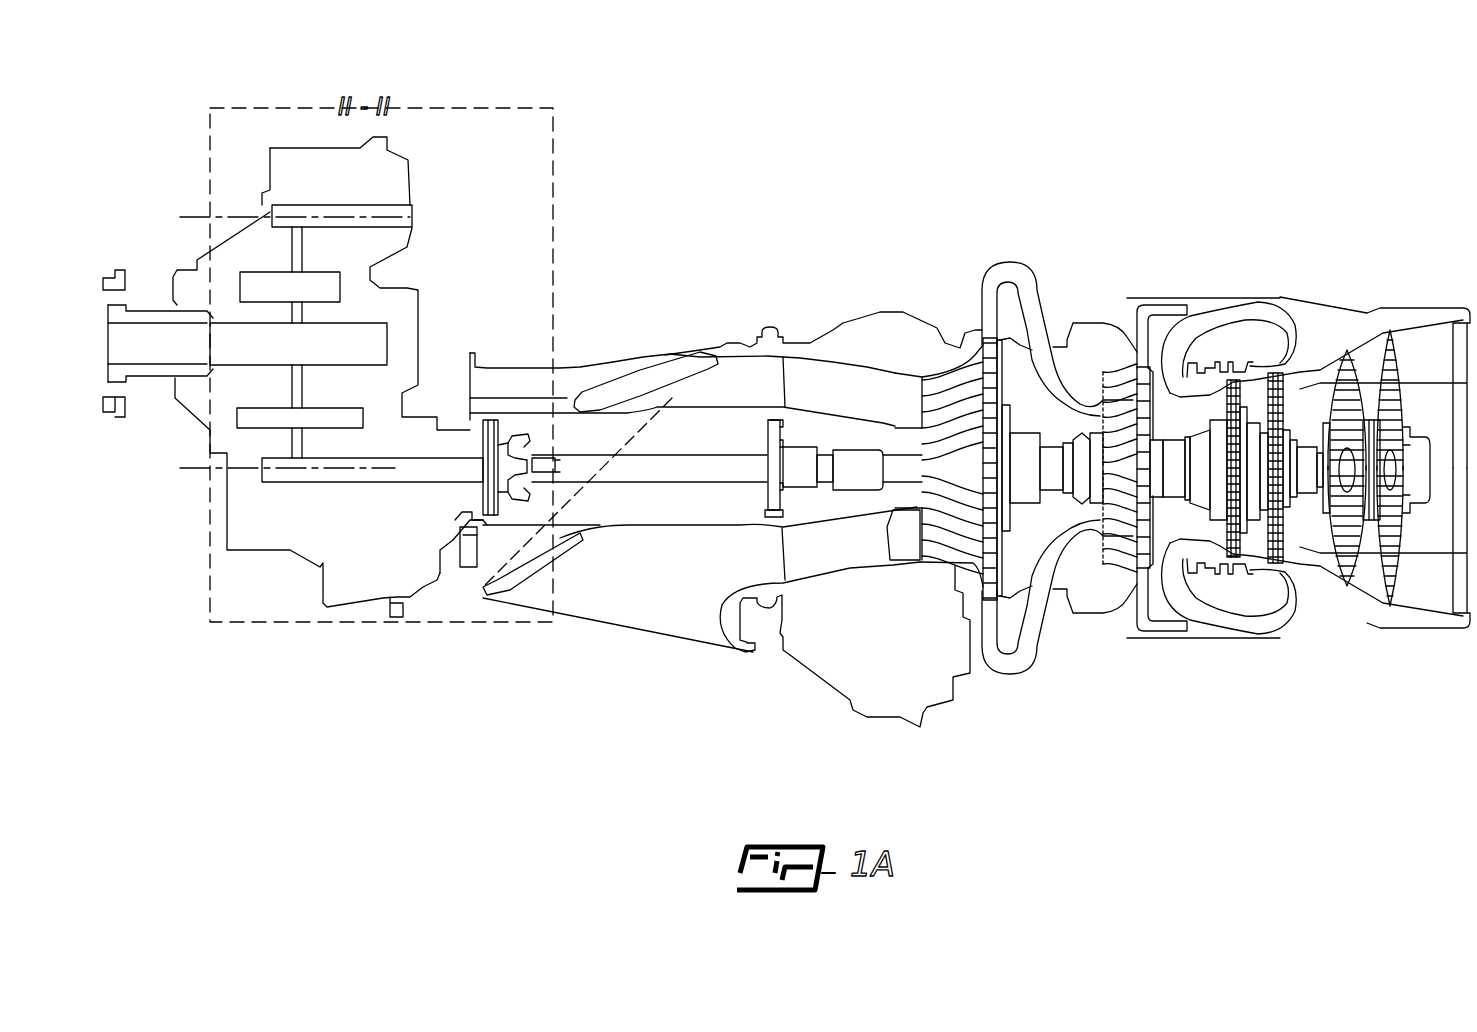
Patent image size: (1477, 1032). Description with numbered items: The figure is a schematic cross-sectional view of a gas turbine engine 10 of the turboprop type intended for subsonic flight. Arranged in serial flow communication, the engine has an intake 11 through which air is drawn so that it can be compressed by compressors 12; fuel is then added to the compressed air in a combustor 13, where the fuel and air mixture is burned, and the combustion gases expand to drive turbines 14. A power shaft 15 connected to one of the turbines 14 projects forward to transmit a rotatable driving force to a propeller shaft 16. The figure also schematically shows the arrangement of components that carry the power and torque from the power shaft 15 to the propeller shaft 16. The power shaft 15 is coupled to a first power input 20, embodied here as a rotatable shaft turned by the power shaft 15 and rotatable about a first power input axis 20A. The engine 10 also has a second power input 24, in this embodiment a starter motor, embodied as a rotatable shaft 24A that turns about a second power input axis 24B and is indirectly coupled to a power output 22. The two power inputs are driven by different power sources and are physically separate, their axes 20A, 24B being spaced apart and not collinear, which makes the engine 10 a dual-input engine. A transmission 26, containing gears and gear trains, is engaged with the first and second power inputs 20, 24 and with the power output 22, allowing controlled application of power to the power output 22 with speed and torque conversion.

The gas turbine engine 10 is at (695, 218).
The intake 11 is at (650, 602).
The compressors 12 is at (1090, 527).
The combustor 13 is at (1253, 332).
The turbines 14 is at (1218, 560).
The power shaft 15 is at (678, 462).
The propeller shaft 16 is at (147, 330).
The first power input 20 is at (383, 495).
The first power input axis 20A is at (200, 470).
The power output 22 is at (378, 305).
The second power input 24 is at (385, 200).
The rotatable shaft 24A is at (303, 205).
The second power input axis 24B is at (223, 213).
The transmission 26 is at (228, 388).